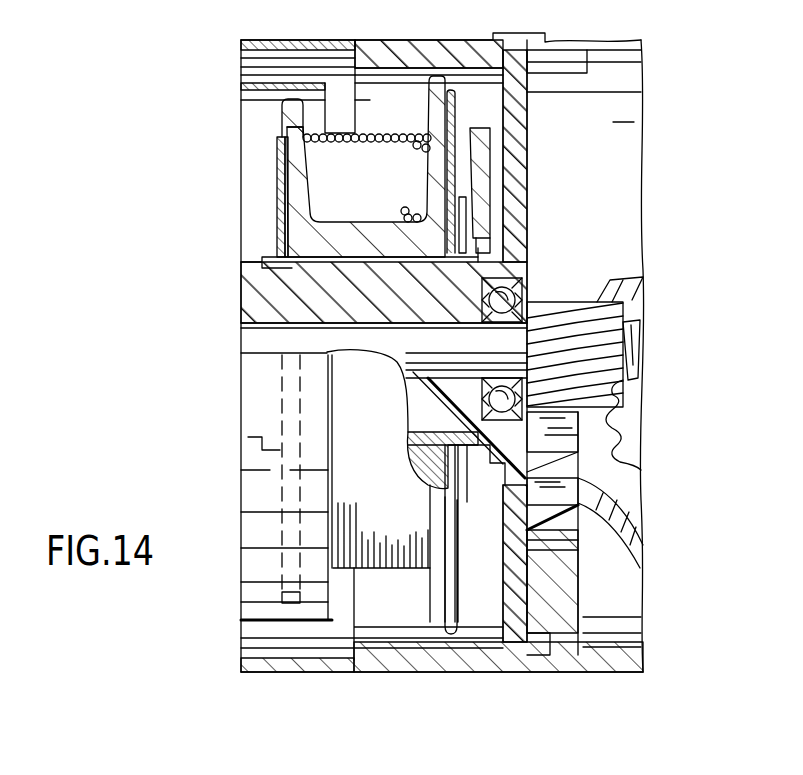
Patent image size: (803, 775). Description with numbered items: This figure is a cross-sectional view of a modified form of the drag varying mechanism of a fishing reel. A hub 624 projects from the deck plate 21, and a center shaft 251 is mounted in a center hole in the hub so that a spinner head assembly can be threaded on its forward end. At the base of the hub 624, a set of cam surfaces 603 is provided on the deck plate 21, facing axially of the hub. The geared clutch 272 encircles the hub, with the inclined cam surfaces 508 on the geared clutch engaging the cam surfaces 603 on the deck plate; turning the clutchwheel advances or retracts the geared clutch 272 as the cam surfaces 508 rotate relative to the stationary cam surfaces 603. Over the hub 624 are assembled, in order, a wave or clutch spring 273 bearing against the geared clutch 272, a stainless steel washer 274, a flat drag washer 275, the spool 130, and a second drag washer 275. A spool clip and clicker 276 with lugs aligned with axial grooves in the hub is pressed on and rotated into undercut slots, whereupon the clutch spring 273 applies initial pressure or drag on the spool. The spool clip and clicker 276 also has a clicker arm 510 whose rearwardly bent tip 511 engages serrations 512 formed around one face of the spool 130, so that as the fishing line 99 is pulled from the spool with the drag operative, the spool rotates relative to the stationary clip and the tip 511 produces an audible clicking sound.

The deck plate 21 is at (520, 188).
The fishing line 99 is at (346, 570).
The spool 130 is at (348, 235).
The center shaft 251 is at (252, 350).
The geared clutch 272 is at (483, 153).
The clutch spring 273 is at (462, 480).
The washer 274 is at (448, 480).
The drag washer 275 is at (450, 472).
The spool clip and clicker 276 is at (282, 238).
The cam surface 508 is at (477, 480).
The clicker arm 510 is at (280, 188).
The tip 511 is at (278, 150).
The serrations 512 is at (282, 113).
The cam surfaces 603 is at (485, 250).
The hub 624 is at (252, 297).